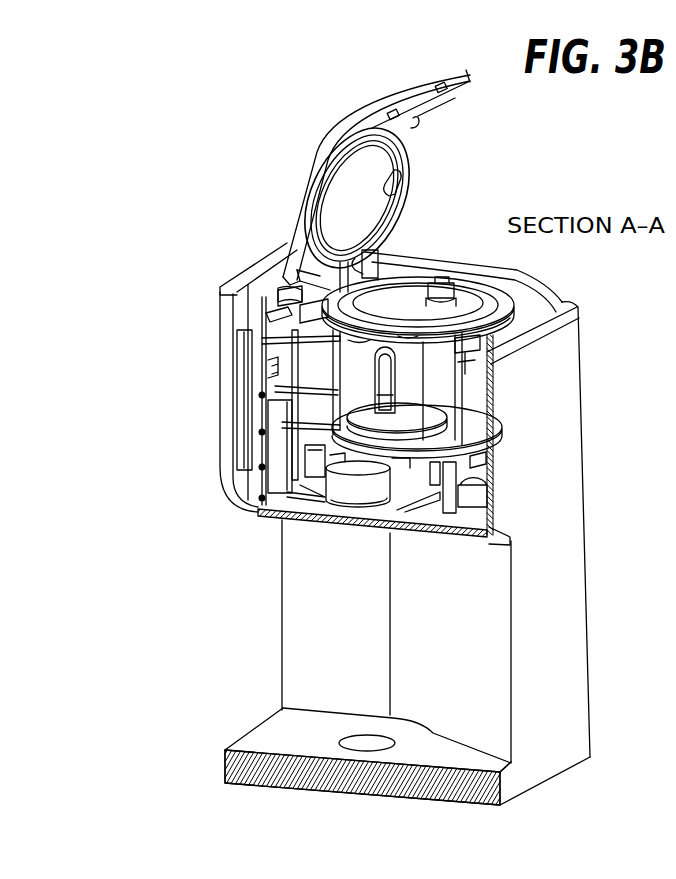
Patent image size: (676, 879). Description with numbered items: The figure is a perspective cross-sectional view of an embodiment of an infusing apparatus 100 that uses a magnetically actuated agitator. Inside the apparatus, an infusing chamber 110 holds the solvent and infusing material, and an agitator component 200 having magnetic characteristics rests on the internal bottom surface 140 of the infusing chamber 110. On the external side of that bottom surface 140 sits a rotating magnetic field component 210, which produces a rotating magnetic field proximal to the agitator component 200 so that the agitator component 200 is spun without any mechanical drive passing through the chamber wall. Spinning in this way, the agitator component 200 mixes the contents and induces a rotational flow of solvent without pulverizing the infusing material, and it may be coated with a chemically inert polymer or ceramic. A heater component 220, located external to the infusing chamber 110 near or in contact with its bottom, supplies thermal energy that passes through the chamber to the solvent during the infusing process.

The infusing apparatus 100 is at (36, 238).
The infusing chamber 110 is at (337, 354).
The internal bottom surface 140 is at (437, 452).
The agitator component 200 is at (447, 428).
The rotating magnetic field component 210 is at (420, 480).
The heater component 220 is at (472, 462).